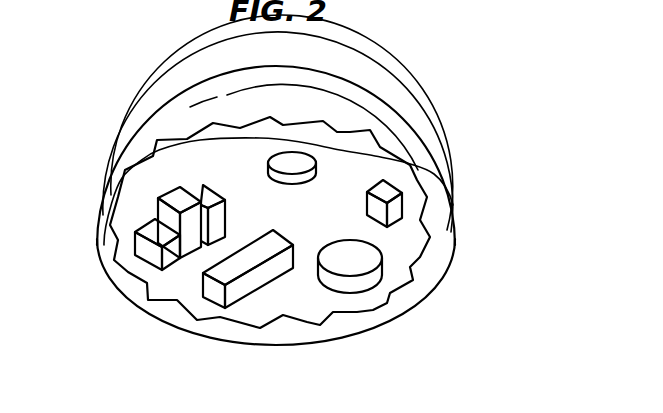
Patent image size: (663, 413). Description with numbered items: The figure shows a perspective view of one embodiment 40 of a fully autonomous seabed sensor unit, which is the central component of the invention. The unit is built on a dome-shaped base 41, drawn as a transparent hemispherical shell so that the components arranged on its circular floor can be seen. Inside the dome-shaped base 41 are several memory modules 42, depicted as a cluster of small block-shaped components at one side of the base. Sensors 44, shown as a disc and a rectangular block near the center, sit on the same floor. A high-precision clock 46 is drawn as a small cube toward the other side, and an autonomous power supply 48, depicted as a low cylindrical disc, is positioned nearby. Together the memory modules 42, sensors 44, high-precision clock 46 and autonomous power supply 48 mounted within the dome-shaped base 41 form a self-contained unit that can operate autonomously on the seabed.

The autonomous seabed sensor unit embodiment 40 is at (413, 82).
The dome-shaped base 41 is at (181, 90).
The memory modules 42 is at (193, 192).
The sensors 44 is at (293, 184).
The high-precision clock 46 is at (387, 190).
The autonomous power supply 48 is at (363, 283).